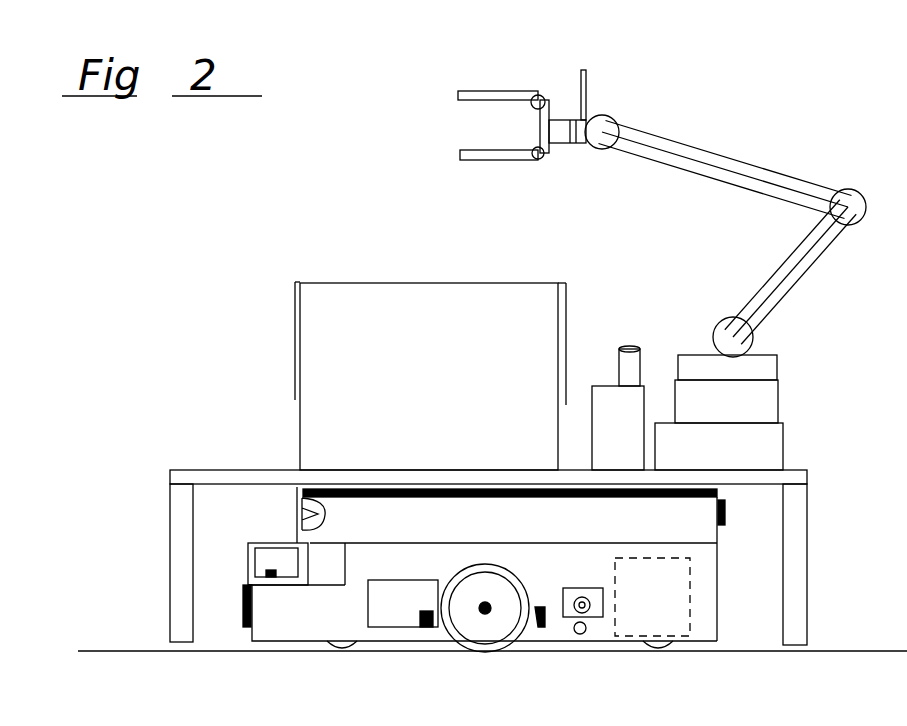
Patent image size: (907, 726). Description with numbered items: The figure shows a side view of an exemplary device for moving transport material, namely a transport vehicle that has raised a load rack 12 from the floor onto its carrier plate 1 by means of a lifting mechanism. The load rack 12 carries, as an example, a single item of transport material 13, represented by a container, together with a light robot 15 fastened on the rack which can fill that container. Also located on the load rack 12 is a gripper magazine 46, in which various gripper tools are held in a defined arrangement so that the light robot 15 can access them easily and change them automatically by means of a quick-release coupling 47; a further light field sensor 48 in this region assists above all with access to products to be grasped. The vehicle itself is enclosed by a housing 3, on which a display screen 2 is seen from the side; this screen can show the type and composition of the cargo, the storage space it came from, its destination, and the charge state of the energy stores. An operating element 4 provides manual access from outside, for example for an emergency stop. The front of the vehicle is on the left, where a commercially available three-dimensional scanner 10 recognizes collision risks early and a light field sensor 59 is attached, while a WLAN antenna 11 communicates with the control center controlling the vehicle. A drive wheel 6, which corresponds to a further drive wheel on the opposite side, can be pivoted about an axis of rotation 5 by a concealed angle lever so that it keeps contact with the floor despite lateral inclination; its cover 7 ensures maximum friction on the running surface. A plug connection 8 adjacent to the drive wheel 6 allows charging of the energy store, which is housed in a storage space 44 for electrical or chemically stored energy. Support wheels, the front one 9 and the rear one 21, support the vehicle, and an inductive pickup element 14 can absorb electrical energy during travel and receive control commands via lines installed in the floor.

The carrier plate 1 is at (660, 527).
The display screen 2 is at (725, 515).
The housing 3 is at (707, 582).
The operating element 4 is at (580, 634).
The axis of rotation 5 is at (536, 625).
The drive wheel 6 is at (485, 633).
The cover of the drive wheel 7 is at (455, 648).
The plug connection 8 is at (423, 617).
The front support wheel 9 is at (336, 647).
The 3D scanner 10 is at (262, 555).
The WLAN antenna 11 is at (302, 512).
The load rack 12 is at (807, 499).
The transport material 13 is at (400, 282).
The inductive pickup element 14 is at (608, 647).
The light robot 15 is at (778, 320).
The rear support wheel 21 is at (664, 651).
The storage space for energy stores 44 is at (677, 598).
The gripper magazine 46 is at (606, 386).
The quick-release coupling 47 is at (573, 143).
The light field sensor 48 is at (586, 80).
The light field sensor 59 is at (243, 627).